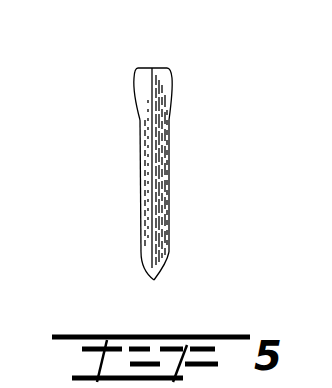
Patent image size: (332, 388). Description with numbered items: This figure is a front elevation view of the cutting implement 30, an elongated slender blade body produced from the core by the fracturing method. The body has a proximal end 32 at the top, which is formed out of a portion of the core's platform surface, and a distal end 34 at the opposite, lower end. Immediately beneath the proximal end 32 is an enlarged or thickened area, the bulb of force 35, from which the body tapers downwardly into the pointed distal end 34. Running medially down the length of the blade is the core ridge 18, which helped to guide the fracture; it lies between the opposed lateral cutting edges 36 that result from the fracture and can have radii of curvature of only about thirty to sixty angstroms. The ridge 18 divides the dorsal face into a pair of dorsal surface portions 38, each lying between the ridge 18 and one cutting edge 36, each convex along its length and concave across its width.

The core ridge 18 is at (153, 198).
The cutting implement 30 is at (142, 162).
The proximal end 32 is at (152, 68).
The distal end 34 is at (154, 280).
The bulb of force 35 is at (136, 92).
The cutting edges 36 is at (141, 148).
The dorsal surface portions 38 is at (163, 125).